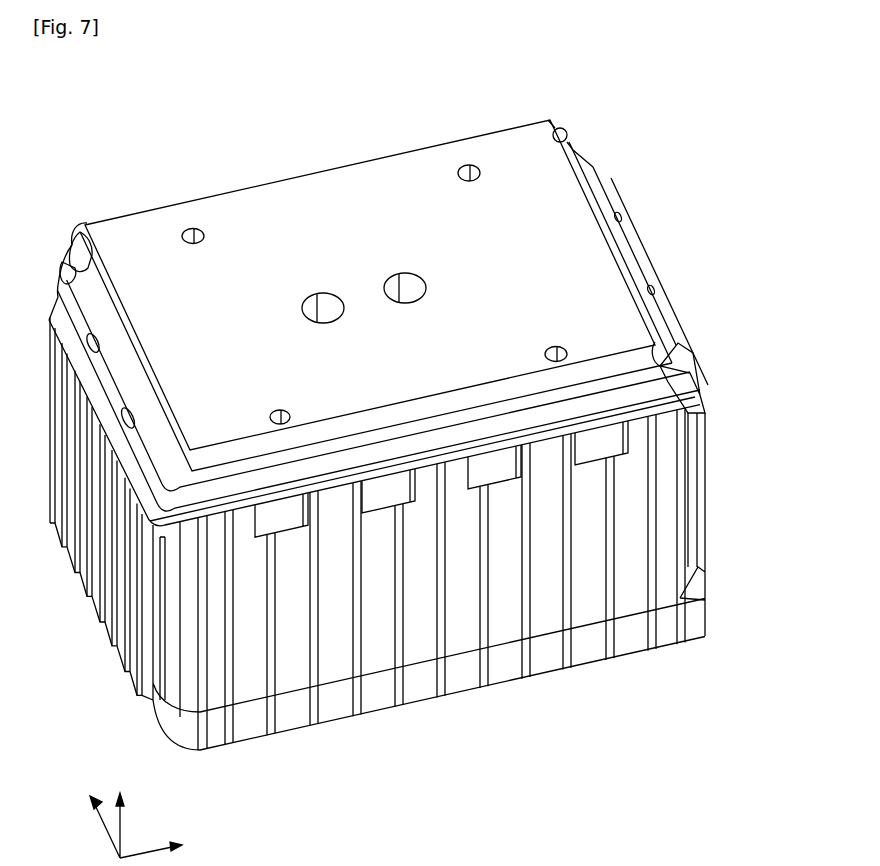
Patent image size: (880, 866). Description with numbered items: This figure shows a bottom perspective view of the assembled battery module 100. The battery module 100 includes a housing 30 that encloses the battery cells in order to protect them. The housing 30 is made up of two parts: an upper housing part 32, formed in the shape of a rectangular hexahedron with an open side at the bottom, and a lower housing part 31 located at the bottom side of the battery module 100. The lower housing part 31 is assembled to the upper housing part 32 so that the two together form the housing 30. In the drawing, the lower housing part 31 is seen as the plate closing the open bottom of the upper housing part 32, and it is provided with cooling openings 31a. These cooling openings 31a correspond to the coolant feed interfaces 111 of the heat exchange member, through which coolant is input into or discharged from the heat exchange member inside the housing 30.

The battery module 100 is at (263, 81).
The housing 30 is at (676, 200).
The lower housing part 31 is at (562, 267).
The cooling openings 31a is at (303, 302).
The coolant feed interfaces 111 is at (410, 292).
The upper housing part 32 is at (705, 507).